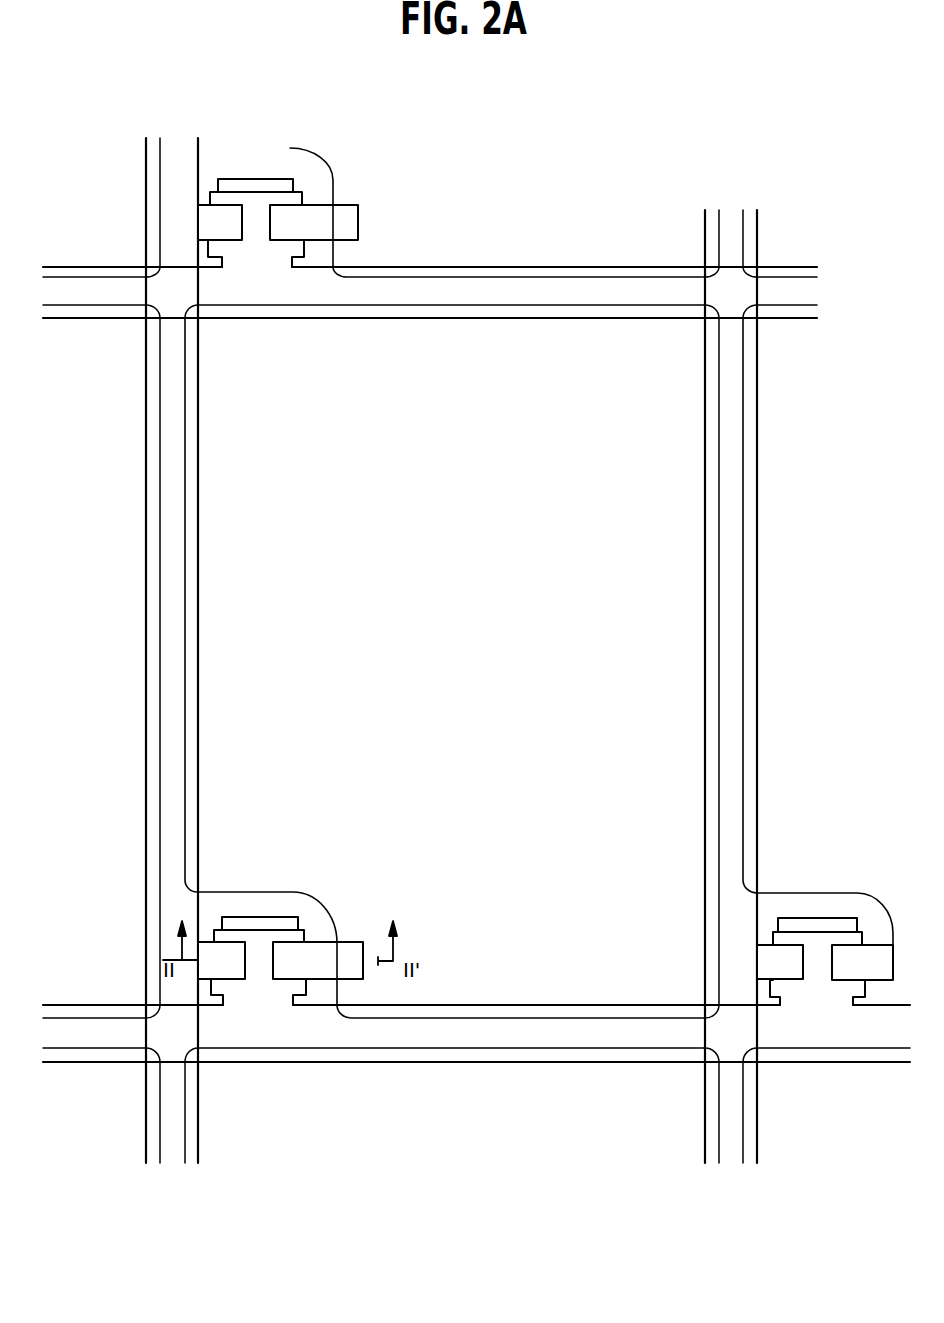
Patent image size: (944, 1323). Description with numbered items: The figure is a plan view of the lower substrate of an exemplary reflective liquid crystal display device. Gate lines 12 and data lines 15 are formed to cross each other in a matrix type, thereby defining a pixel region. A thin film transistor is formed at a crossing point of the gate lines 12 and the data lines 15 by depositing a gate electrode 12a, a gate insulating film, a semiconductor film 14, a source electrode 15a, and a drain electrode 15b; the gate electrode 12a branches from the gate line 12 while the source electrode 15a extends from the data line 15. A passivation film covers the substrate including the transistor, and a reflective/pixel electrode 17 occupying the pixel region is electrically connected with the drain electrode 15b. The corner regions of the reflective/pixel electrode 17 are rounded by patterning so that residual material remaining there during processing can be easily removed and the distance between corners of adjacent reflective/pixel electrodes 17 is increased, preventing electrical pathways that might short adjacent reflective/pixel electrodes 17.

The gate line 12 is at (475, 1033).
The gate electrode 12a is at (260, 1005).
The semiconductor film 14 is at (260, 938).
The data line 15 is at (167, 588).
The source electrode 15a is at (229, 950).
The drain electrode 15b is at (323, 948).
The reflective/pixel electrode 17 is at (685, 677).